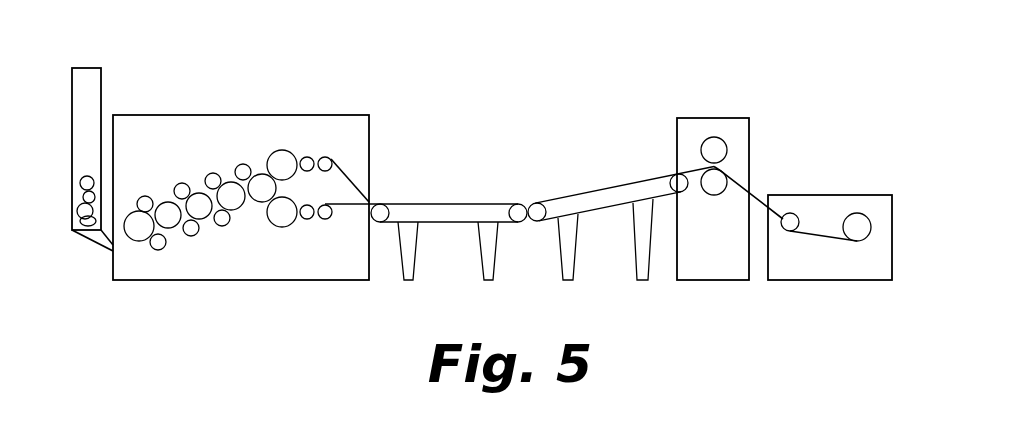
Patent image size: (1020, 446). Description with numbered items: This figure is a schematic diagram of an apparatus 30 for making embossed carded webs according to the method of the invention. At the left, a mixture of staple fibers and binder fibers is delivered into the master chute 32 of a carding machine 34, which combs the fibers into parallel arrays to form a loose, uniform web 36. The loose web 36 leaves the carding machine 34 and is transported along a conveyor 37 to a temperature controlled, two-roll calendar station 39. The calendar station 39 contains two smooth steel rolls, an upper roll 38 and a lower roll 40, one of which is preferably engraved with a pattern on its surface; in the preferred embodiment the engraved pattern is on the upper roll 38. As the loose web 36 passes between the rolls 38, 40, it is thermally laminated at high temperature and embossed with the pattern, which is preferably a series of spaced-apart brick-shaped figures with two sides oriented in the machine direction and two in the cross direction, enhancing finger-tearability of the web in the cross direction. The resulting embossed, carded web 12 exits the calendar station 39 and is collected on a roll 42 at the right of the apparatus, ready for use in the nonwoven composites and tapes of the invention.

The apparatus for making a sheet product 30 is at (586, 70).
The master chute 32 is at (72, 71).
The carding machine 34 is at (228, 115).
The loose, uniform web 36 is at (443, 204).
The conveyor 37 is at (497, 204).
The upper roll 38 is at (713, 145).
The two-roll calendar station 39 is at (737, 118).
The lower roll 40 is at (712, 186).
The embossed carded web 12 is at (758, 198).
The roll 42 is at (858, 218).